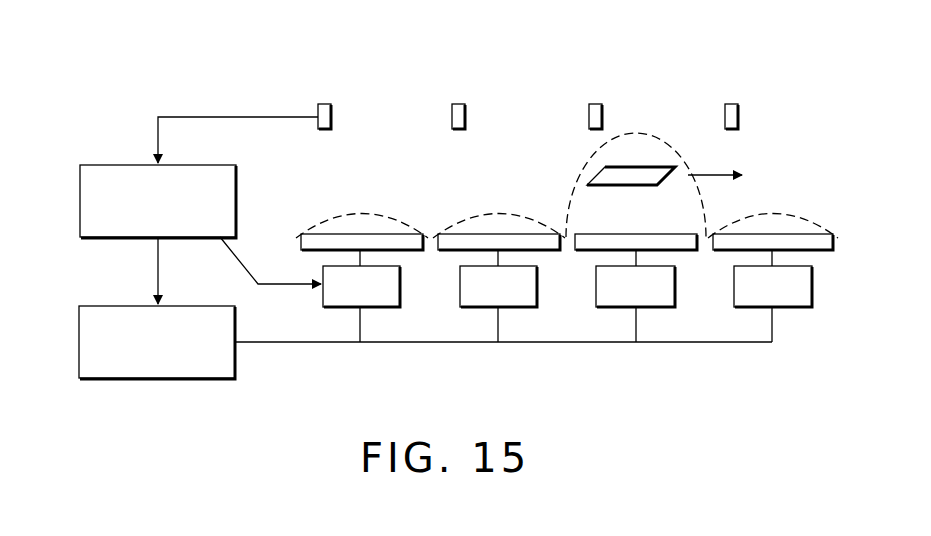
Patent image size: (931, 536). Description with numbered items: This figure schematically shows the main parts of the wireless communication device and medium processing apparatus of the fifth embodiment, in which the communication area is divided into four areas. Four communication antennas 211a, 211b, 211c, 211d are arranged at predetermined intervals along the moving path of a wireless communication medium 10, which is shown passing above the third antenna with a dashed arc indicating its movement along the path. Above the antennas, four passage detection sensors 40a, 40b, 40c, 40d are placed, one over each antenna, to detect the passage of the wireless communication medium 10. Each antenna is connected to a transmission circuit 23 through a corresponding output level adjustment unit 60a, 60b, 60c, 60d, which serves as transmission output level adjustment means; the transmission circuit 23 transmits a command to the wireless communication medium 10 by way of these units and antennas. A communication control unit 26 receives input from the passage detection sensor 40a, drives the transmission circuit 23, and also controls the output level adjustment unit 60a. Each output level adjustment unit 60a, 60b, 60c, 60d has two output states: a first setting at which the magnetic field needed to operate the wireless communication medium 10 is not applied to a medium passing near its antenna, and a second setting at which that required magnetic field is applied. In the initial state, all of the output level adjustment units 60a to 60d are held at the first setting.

The wireless communication medium 10 is at (637, 167).
The transmission circuit 23 is at (79, 340).
The communication control unit 26 is at (80, 200).
The passage detection sensor 40a is at (325, 103).
The passage detection sensor 40b is at (459, 103).
The passage detection sensor 40c is at (596, 103).
The passage detection sensor 40d is at (732, 103).
The output level adjustment unit 60a is at (381, 309).
The output level adjustment unit 60b is at (518, 309).
The output level adjustment unit 60c is at (656, 309).
The output level adjustment unit 60d is at (789, 309).
The communication antenna 211a is at (348, 233).
The communication antenna 211b is at (488, 233).
The communication antenna 211c is at (601, 233).
The communication antenna 211d is at (792, 233).